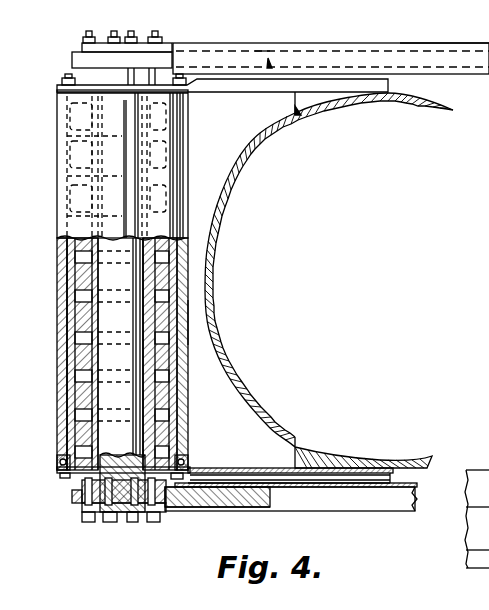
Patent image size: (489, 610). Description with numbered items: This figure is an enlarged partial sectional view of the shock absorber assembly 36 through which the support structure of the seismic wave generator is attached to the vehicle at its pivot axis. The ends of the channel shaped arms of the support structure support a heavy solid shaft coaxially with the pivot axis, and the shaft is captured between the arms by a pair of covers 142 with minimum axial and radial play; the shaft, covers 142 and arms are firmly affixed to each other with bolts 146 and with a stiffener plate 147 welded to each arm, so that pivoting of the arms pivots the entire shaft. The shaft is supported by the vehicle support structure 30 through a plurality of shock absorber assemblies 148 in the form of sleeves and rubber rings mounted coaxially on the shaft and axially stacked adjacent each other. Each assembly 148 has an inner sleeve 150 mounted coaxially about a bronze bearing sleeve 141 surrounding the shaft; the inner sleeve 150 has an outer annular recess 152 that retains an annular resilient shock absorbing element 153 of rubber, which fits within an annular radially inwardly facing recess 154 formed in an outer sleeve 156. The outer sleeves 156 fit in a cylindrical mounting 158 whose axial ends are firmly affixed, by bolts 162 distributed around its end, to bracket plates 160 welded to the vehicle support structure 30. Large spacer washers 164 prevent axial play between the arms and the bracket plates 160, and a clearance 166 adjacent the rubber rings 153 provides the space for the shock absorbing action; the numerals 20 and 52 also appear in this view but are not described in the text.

The frame 20 is at (447, 47).
The vehicle support structure 30 is at (244, 164).
The shock absorber assembly 36 is at (65, 562).
The support member 52 is at (368, 609).
The bearing sleeve 141 is at (143, 286).
The covers 142 is at (85, 45).
The bolts 146 is at (110, 37).
The stiffener plate 147 is at (262, 50).
The shock absorber assemblies 148 is at (60, 284).
The inner sleeve 150 is at (66, 354).
The outer annular recess 152 is at (62, 302).
The annular resilient shock absorbing element 153 is at (58, 441).
The annular radially inwardly facing recess 154 is at (60, 272).
The outer sleeve 156 is at (58, 404).
The cylindrical mounting 158 is at (57, 370).
The bracket plates 160 is at (237, 88).
The bolts 162 is at (62, 476).
The spacer washers 164 is at (88, 70).
The clearance 166 is at (183, 340).